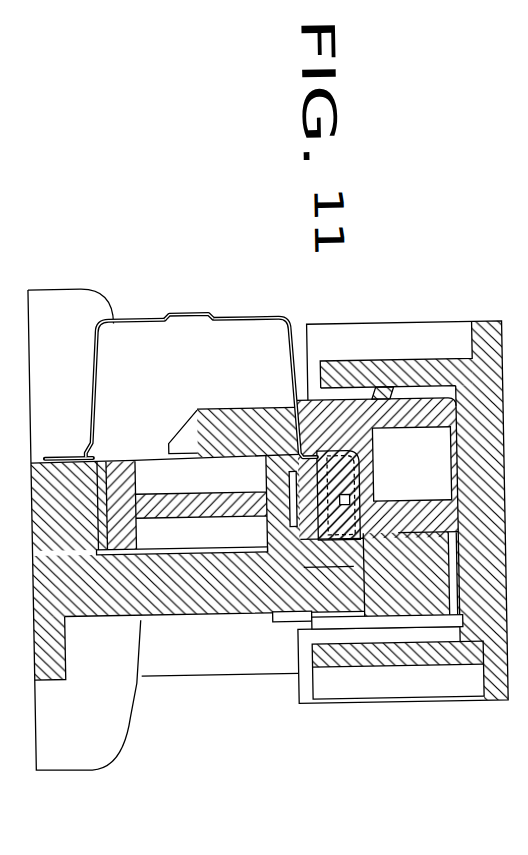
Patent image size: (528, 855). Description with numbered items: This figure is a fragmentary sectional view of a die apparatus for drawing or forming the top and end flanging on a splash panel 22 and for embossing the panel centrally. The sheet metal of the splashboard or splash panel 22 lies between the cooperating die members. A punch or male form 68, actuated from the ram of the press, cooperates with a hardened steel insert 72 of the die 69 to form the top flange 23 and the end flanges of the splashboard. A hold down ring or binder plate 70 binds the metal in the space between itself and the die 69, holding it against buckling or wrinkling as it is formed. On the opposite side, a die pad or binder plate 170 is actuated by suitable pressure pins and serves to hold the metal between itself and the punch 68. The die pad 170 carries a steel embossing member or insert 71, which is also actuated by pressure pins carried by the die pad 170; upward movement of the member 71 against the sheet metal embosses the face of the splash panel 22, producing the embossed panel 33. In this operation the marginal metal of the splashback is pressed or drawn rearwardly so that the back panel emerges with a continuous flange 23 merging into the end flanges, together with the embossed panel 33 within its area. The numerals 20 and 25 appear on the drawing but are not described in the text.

The cover 20 is at (154, 345).
The projection 25 is at (184, 311).
The die pad 170 is at (301, 474).
The embossing member 71 is at (298, 456).
The punch 68 is at (319, 418).
The embossed panel 33 is at (324, 490).
The splash panel 22 is at (318, 532).
The hardened steel insert 72 is at (340, 545).
The top flange 23 is at (333, 541).
The die 69 is at (239, 597).
The hold down ring 70 is at (434, 603).